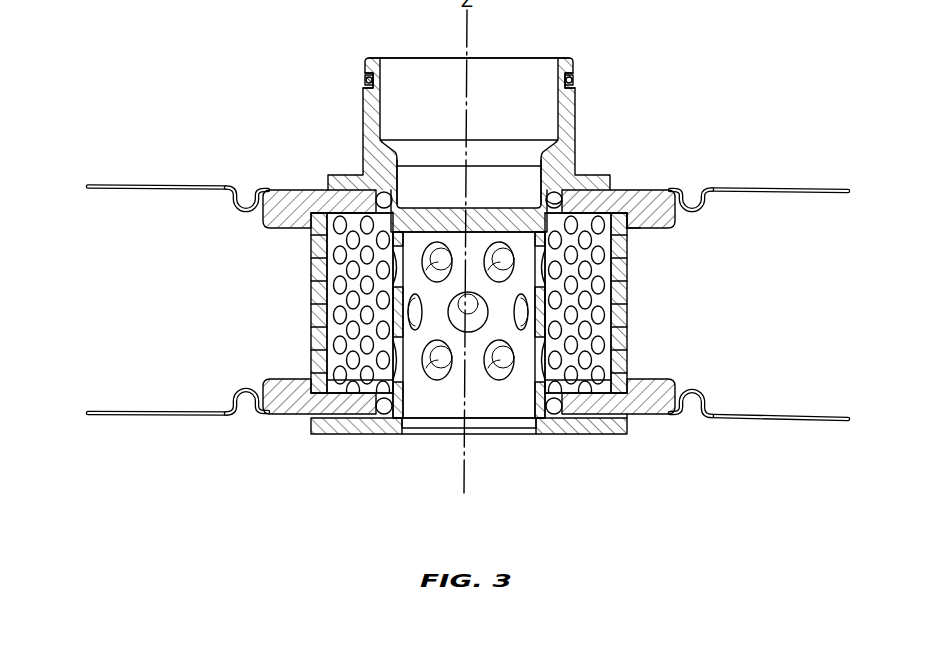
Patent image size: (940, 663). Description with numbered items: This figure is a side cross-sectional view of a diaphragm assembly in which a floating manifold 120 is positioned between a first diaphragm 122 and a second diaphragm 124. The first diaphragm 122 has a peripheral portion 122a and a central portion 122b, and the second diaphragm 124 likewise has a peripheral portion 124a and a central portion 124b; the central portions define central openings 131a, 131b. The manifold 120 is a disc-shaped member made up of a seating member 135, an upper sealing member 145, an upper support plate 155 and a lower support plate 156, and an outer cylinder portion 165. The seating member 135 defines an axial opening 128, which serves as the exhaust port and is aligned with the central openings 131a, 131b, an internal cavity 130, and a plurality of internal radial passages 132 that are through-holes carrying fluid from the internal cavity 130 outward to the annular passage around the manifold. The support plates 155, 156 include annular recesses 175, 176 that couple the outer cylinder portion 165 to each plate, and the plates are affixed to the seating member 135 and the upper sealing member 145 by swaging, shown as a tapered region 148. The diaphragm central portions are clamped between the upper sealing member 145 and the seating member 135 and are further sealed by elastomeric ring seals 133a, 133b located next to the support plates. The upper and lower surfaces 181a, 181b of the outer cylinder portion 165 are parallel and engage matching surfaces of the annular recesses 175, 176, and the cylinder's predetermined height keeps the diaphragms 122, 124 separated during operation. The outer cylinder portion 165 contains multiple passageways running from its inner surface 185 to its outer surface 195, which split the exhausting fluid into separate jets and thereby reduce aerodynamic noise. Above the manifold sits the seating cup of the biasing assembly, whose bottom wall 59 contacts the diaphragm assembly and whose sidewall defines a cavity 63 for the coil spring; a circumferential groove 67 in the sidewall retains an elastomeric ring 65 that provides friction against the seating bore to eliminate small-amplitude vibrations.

The floating manifold 120 is at (812, 363).
The first diaphragm 122 is at (90, 185).
The peripheral portion of first diaphragm 122a is at (175, 185).
The central portion of first diaphragm 122b is at (290, 190).
The second diaphragm 124 is at (88, 412).
The peripheral portion of second diaphragm 124a is at (140, 416).
The central portion of second diaphragm 124b is at (285, 418).
The axial opening 128 is at (497, 428).
The internal cavity 130 is at (549, 278).
The central opening 131a is at (400, 416).
The central opening 131b is at (378, 196).
The internal radial passages 132 is at (482, 232).
The elastomeric ring seal 133a is at (560, 414).
The elastomeric ring seal 133b is at (549, 194).
The seating member 135 is at (620, 436).
The upper sealing member 145 is at (365, 62).
The tapered region 148 is at (397, 140).
The upper support plate 155 is at (657, 217).
The lower support plate 156 is at (592, 392).
The bottom wall 59 is at (422, 205).
The cavity 63 is at (495, 195).
The elastomeric ring 65 is at (363, 80).
The circumferential groove 67 is at (362, 84).
The outer cylinder portion 165 is at (630, 228).
The annular recess 175 is at (561, 198).
The annular recess 176 is at (630, 424).
The upper surface of outer cylinder portion 181a is at (340, 395).
The lower surface of outer cylinder portion 181b is at (345, 222).
The inner surface 185 is at (596, 328).
The outer surface 195 is at (314, 286).